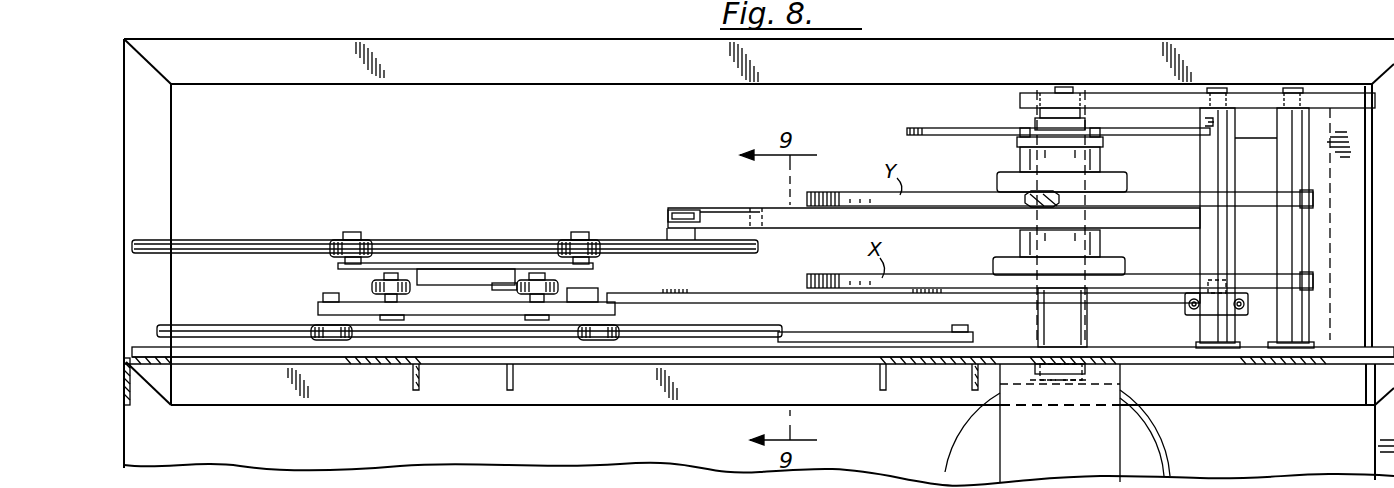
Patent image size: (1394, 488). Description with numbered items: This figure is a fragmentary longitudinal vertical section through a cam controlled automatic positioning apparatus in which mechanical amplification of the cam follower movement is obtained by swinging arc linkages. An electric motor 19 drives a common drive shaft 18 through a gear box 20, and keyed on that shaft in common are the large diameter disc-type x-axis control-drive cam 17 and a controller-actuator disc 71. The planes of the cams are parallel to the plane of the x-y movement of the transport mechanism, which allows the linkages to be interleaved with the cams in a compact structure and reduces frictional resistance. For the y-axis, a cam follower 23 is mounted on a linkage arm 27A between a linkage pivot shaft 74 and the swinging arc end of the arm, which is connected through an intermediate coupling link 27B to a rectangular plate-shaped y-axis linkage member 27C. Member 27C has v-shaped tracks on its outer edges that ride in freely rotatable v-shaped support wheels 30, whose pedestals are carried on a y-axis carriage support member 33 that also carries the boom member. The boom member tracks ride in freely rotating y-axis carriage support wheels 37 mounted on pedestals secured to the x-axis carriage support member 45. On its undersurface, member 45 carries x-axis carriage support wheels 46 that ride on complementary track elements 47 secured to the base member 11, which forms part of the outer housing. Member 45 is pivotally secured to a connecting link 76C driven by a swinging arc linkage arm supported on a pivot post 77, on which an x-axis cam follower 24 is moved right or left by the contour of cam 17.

The base member 11 is at (1368, 50).
The x-axis control-drive cam 17 is at (1140, 282).
The common drive shaft 18 is at (1030, 110).
The electric motor 19 is at (1160, 446).
The gear box 20 is at (1003, 464).
The cam follower 23 is at (1026, 198).
The x-axis cam follower 24 is at (1213, 291).
The linkage arm 27A is at (770, 207).
The intermediate coupling link 27B is at (668, 218).
The y-axis linkage member 27C is at (237, 240).
The support wheels 30 is at (340, 236).
The y-axis carriage support member 33 is at (337, 265).
The y-axis carriage support wheels 37 is at (560, 286).
The x-axis carriage support member 45 is at (355, 302).
The x-axis carriage support wheels 46 is at (315, 326).
The track elements 47 is at (194, 325).
The controller-actuator disc 71 is at (908, 130).
The linkage pivot shaft 74 is at (1287, 168).
The connecting link 76C is at (868, 303).
The pivot post 77 is at (1210, 176).